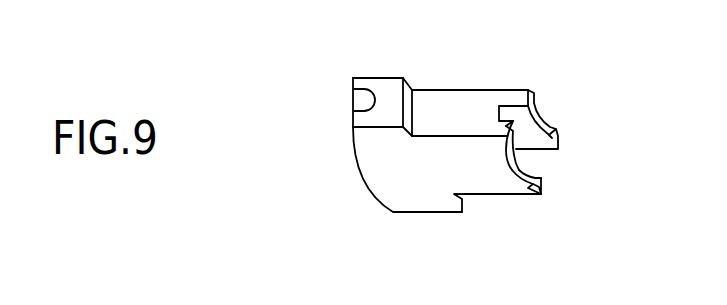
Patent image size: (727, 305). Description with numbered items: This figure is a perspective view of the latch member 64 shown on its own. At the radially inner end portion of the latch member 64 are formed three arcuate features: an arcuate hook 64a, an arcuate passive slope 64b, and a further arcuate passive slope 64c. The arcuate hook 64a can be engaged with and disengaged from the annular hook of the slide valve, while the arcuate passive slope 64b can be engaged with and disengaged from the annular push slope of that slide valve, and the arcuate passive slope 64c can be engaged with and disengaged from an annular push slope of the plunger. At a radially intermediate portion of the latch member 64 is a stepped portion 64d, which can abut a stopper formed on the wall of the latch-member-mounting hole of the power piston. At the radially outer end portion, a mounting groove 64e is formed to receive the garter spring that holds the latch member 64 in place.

The latch member 64 is at (427, 198).
The arcuate hook 64a is at (536, 157).
The arcuate passive slope 64b is at (516, 188).
The arcuate passive slope 64c is at (542, 124).
The stepped portion 64d is at (463, 202).
The mounting groove 64e is at (354, 105).